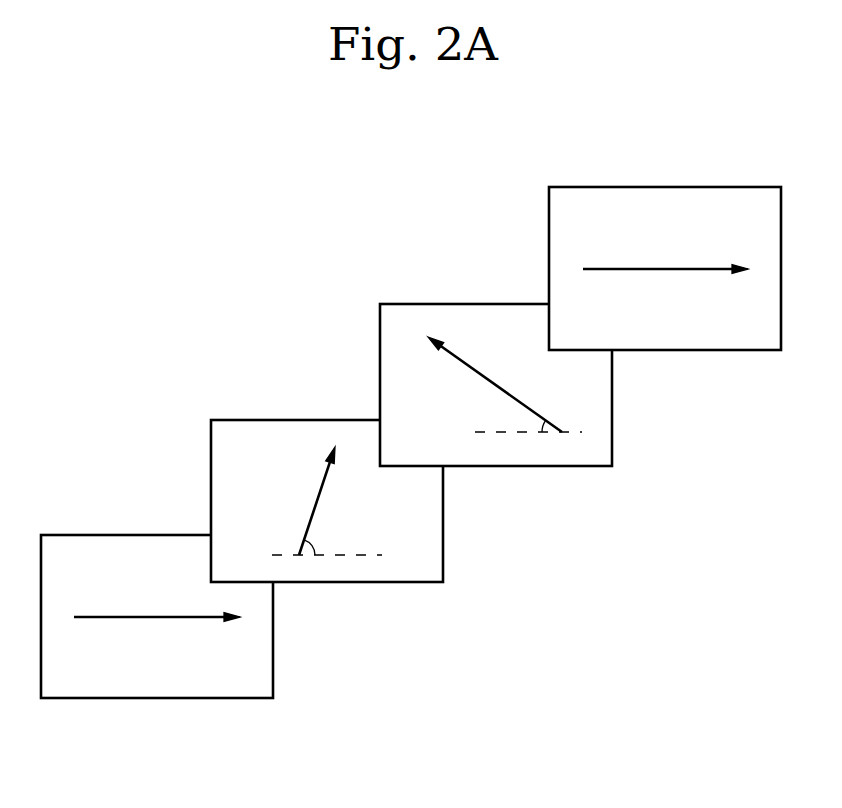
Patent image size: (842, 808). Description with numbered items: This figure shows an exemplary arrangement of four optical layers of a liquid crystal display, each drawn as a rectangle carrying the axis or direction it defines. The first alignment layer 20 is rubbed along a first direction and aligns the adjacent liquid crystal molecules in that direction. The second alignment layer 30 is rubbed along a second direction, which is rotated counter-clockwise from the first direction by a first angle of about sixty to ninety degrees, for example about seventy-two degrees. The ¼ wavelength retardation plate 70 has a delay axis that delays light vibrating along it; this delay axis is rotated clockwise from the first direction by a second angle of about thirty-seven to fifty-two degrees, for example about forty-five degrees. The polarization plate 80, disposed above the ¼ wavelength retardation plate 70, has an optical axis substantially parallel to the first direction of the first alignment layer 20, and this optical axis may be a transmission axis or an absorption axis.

The first alignment layer 20 is at (205, 698).
The second alignment layer 30 is at (375, 582).
The ¼ wavelength retardation plate 70 is at (544, 466).
The polarization plate 80 is at (713, 350).